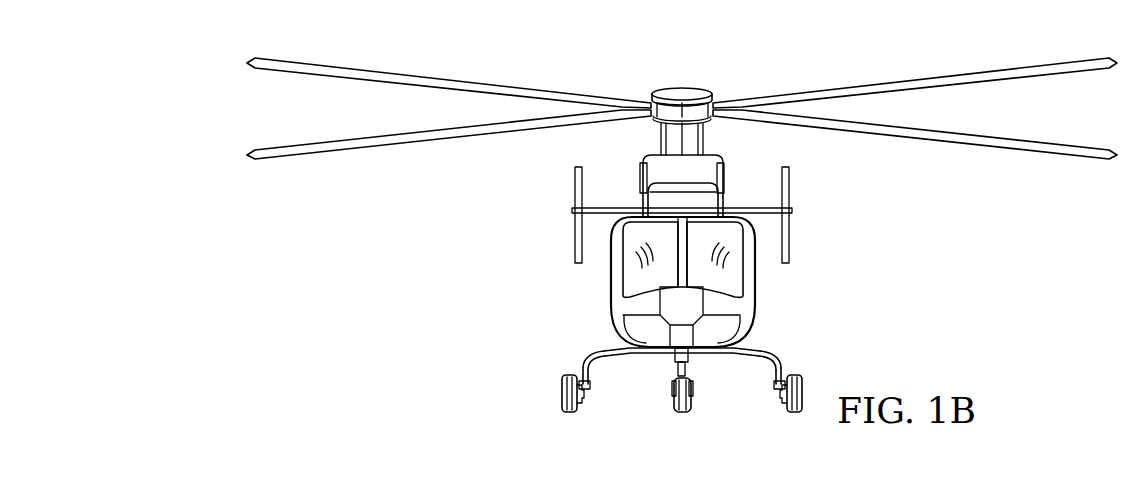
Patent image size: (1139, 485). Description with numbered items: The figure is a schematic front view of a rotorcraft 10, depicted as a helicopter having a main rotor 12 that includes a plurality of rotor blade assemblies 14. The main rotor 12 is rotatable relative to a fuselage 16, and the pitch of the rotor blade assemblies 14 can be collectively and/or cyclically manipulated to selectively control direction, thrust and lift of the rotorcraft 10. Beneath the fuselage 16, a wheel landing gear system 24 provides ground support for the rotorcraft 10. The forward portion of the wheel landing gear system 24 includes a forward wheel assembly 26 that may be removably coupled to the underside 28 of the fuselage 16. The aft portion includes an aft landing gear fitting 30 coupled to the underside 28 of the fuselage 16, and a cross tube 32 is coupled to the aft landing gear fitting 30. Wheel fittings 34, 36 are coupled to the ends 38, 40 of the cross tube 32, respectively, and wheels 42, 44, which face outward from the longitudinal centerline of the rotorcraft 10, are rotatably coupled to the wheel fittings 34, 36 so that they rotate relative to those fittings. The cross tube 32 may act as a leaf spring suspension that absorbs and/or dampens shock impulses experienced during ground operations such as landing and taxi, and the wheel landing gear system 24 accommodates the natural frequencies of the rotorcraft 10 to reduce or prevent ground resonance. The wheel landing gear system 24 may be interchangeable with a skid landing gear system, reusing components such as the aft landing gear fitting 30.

The rotorcraft 10 is at (458, 222).
The main rotor 12 is at (669, 91).
The rotor blade assemblies 14 is at (965, 73).
The fuselage 16 is at (756, 296).
The wheel landing gear system 24 is at (655, 408).
The forward wheel assembly 26 is at (680, 413).
The underside of fuselage 28 is at (647, 356).
The aft landing gear fitting 30 is at (697, 357).
The cross tube 32 is at (768, 356).
The wheel fitting 34 is at (774, 393).
The wheel fitting 36 is at (590, 393).
The end of cross tube 38 is at (785, 370).
The end of cross tube 40 is at (580, 370).
The wheel 42 is at (793, 413).
The wheel 44 is at (562, 392).